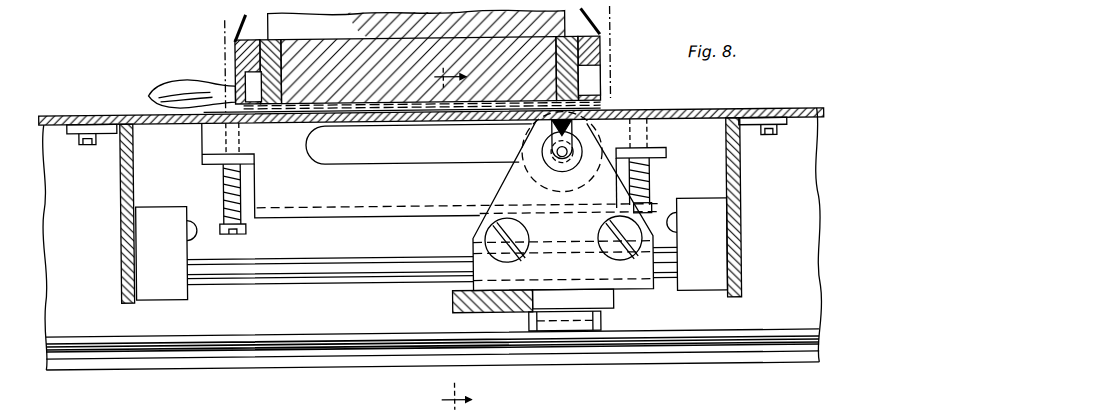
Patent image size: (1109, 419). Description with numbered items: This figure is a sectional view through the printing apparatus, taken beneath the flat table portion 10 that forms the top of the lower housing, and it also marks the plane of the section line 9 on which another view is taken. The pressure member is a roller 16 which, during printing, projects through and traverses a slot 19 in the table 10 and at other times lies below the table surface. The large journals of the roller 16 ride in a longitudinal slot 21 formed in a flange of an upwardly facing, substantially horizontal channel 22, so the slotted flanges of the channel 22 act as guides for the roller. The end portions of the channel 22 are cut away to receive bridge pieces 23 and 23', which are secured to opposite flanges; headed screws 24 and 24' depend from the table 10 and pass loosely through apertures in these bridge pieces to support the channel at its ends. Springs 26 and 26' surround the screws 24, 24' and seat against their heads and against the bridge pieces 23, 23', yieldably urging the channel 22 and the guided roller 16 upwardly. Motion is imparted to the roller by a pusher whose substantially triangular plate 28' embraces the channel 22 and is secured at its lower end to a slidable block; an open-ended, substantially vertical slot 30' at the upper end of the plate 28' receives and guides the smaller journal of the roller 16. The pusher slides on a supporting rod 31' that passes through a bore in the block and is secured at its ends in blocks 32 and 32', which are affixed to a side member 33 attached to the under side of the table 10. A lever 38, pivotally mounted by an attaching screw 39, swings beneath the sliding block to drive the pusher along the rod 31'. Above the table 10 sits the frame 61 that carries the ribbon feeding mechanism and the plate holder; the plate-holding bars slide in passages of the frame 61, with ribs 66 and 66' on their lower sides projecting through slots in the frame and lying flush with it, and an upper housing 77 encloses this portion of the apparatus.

The table portion 10 is at (770, 112).
The roller 16 is at (532, 170).
The slot 19 is at (236, 133).
The slot 21 is at (462, 160).
The channel 22 is at (457, 189).
The bridge piece 23 is at (666, 163).
The bridge piece 23' is at (208, 147).
The screw 24 is at (661, 193).
The screw 24' is at (224, 237).
The spring 26 is at (671, 177).
The spring 26' is at (214, 194).
The triangular plate 28' is at (563, 205).
The slot 30' is at (544, 151).
The supporting rod 31' is at (432, 281).
The block 32 is at (697, 244).
The block 32' is at (167, 253).
The side member 33 is at (126, 190).
The lever 38 is at (470, 312).
The attaching screw 39 is at (600, 322).
The frame 61 is at (256, 21).
The rib 66 is at (431, 74).
The rib 66' is at (192, 78).
The upper housing 77 is at (616, 37).
The section line 9- 9 is at (465, 240).